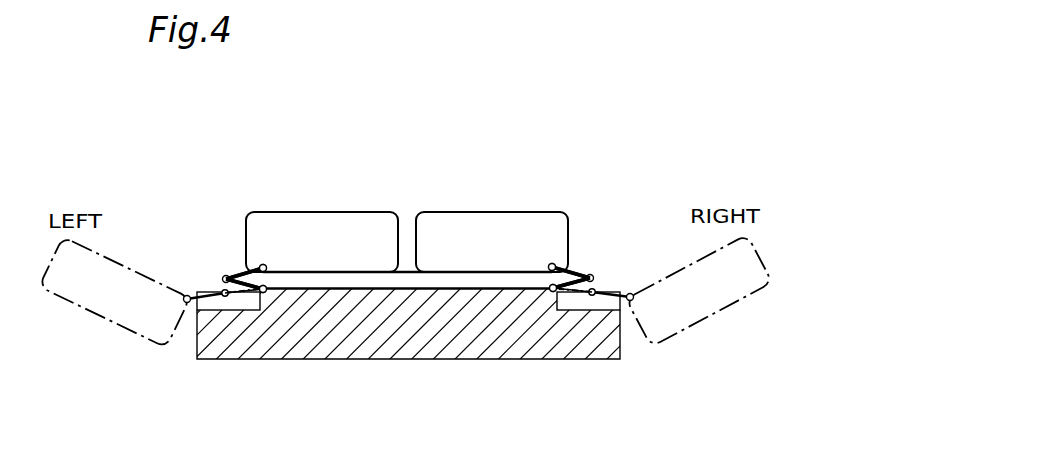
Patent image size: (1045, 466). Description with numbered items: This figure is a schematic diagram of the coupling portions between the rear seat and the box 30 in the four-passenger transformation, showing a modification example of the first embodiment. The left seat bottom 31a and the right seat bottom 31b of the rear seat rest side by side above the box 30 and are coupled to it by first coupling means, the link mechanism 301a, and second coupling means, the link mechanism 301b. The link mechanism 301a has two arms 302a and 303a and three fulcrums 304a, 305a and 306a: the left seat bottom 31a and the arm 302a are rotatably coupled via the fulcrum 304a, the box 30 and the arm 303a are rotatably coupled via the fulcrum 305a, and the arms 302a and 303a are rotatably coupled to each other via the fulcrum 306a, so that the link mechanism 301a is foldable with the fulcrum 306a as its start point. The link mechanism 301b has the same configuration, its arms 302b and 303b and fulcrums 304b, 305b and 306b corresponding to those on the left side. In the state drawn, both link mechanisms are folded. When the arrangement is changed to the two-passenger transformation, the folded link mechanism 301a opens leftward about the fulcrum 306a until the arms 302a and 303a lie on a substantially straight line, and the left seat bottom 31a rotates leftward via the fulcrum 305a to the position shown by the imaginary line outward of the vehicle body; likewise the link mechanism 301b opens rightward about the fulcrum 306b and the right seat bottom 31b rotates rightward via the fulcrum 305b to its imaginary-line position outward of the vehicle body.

The box 30 is at (455, 290).
The left seat bottom 31a is at (358, 236).
The right seat bottom 31b is at (521, 236).
The first coupling means (link mechanism) 301a is at (213, 279).
The second coupling means (link mechanism) 301b is at (587, 266).
The arm 302a is at (238, 272).
The arm 302b is at (584, 271).
The arm 303a is at (241, 293).
The arm 303b is at (577, 293).
The fulcrum 304a is at (266, 265).
The fulcrum 304b is at (552, 264).
The fulcrum 305a is at (266, 291).
The fulcrum 305b is at (551, 290).
The fulcrum 306a is at (213, 298).
The fulcrum 306b is at (595, 281).